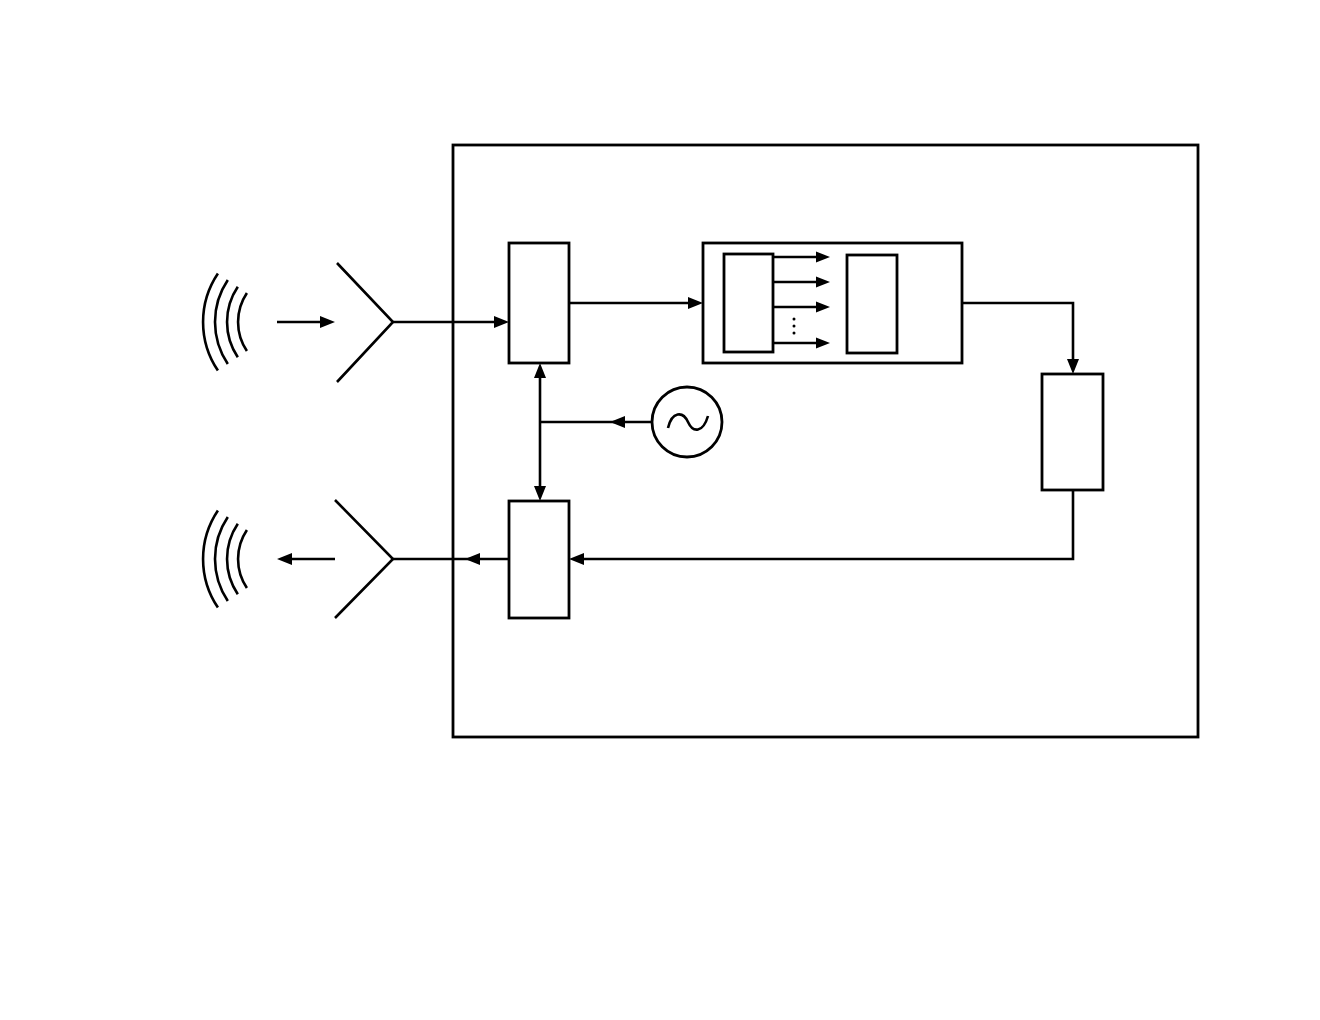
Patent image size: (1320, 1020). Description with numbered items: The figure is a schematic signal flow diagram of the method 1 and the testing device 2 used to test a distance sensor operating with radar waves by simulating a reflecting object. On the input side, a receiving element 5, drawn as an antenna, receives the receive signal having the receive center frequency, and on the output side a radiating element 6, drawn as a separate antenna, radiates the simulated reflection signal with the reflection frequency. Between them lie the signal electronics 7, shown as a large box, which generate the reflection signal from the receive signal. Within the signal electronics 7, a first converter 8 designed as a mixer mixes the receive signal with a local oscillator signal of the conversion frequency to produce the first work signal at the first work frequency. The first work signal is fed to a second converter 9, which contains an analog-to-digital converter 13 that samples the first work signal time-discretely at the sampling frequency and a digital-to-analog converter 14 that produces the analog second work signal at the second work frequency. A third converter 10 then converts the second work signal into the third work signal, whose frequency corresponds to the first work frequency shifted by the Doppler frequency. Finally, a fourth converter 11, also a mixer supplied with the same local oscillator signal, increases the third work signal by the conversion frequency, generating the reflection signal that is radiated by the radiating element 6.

The method 1 is at (897, 65).
The testing device 2 is at (986, 65).
The receiving element 5 is at (365, 292).
The radiating element 6 is at (367, 592).
The signal electronics 7 is at (1131, 209).
The first converter 8 is at (562, 281).
The second converter 9 is at (952, 281).
The third converter 10 is at (1091, 448).
The fourth converter 11 is at (555, 574).
The analog-to-digital converter 13 is at (766, 319).
The digital-to-analog converter 14 is at (890, 319).